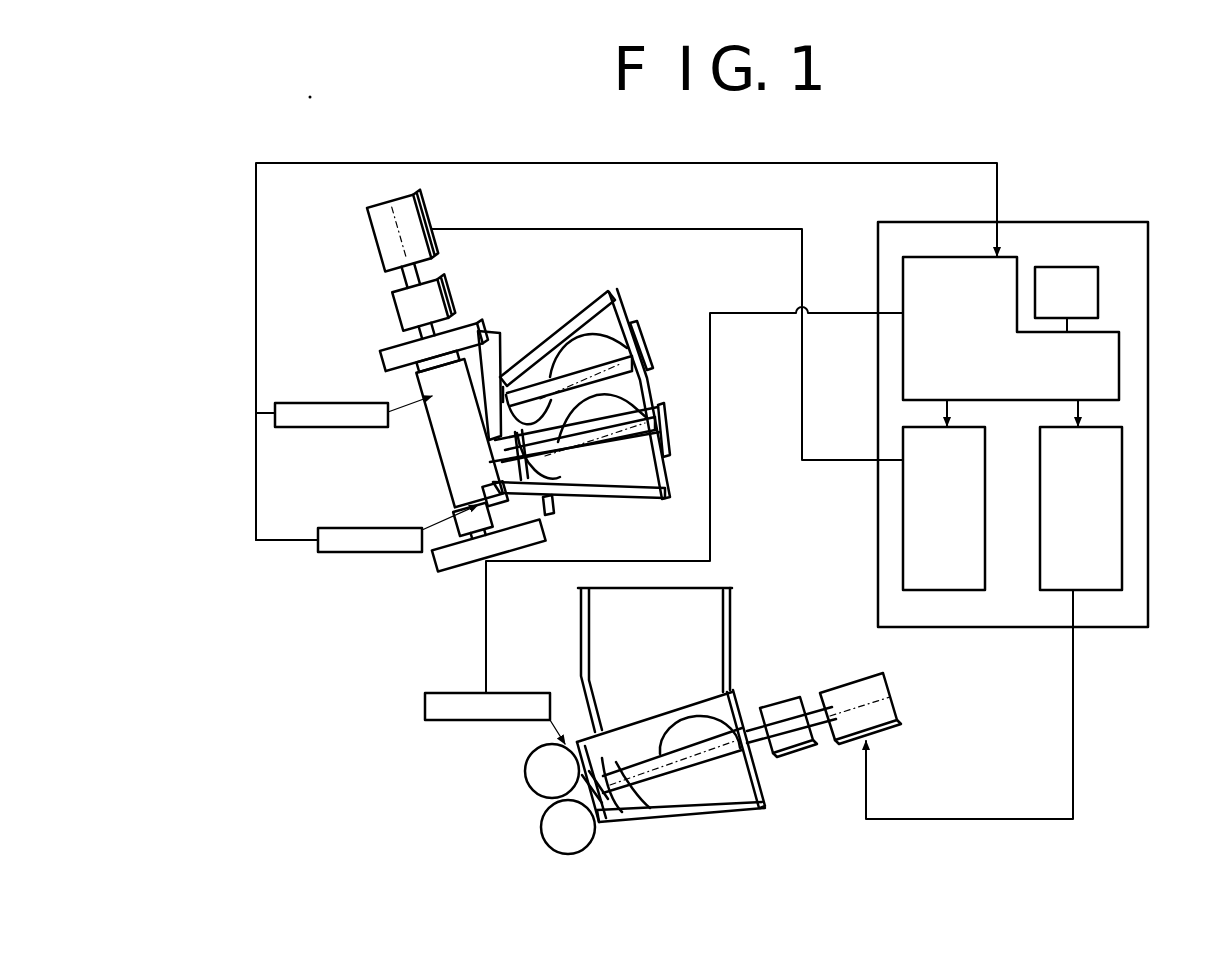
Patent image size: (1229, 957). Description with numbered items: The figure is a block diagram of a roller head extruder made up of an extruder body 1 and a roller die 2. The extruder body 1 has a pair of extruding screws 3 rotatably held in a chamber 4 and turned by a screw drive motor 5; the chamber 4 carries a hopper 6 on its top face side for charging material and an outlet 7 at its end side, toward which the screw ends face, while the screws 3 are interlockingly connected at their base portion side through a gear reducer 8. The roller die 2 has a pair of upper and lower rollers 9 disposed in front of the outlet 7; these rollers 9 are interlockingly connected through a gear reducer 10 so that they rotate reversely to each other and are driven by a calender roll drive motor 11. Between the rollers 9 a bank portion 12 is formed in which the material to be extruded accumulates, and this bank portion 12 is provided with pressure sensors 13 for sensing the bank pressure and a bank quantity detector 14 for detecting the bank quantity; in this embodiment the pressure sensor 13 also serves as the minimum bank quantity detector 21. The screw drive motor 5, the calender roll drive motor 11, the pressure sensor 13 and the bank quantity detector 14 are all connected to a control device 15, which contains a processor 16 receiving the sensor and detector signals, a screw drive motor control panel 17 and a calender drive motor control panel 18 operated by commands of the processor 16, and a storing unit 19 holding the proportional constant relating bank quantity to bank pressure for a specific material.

The extruder body 1 is at (628, 289).
The roller die 2 is at (424, 558).
The extruding screws 3 is at (570, 347).
The chamber 4 is at (590, 301).
The motor 5 is at (897, 708).
The hopper 6 is at (732, 626).
The outlet 7 is at (478, 424).
The gear reducer 8 is at (803, 750).
The upper and lower rollers 9 is at (437, 471).
The gear reducer 10 is at (397, 310).
The calender roll drive motor 11 is at (374, 232).
The bank portion 12 is at (547, 806).
The pressure sensors 13 is at (369, 502).
The bank quantity detector 14 is at (425, 709).
The control device 15 is at (1150, 247).
The processor 16 is at (1120, 358).
The screw drive motor control panel 17 is at (1122, 545).
The calender drive motor control panel 18 is at (903, 539).
The storing unit 19 is at (1076, 272).
The minimum bank quantity detectors 21 is at (290, 428).